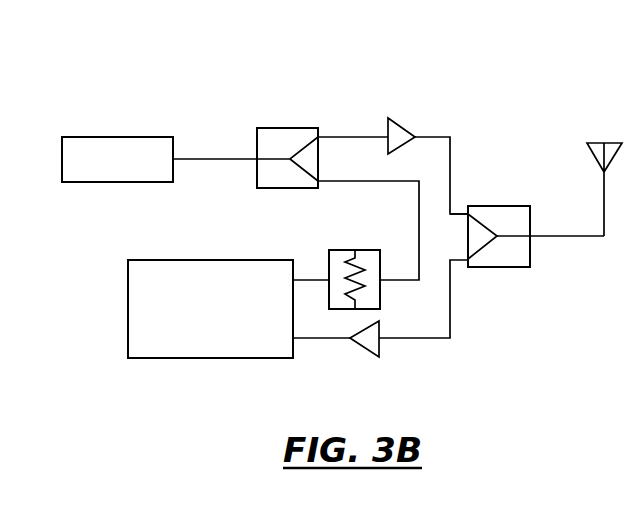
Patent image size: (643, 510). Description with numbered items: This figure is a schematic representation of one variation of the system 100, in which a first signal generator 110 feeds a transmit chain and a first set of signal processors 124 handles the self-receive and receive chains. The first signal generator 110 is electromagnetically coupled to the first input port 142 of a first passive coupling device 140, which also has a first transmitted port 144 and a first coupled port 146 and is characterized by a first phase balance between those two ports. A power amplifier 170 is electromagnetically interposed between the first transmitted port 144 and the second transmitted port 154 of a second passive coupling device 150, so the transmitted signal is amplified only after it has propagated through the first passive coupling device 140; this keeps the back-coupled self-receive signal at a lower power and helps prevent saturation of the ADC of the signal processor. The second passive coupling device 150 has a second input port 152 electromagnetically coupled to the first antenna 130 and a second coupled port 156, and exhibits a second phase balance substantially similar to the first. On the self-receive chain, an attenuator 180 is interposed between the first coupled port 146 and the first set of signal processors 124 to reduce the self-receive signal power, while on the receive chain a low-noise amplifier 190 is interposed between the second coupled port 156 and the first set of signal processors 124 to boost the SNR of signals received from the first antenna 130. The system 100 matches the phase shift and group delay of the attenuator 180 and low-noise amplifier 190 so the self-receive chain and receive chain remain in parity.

The system 100 is at (54, 59).
The first signal generator 110 is at (118, 137).
The first set of signal processors 124 is at (192, 360).
The first antenna 130 is at (592, 143).
The first passive coupling device 140 is at (295, 128).
The first input port 142 is at (257, 159).
The first transmitted port 144 is at (318, 137).
The first coupled port 146 is at (324, 183).
The second passive coupling device 150 is at (513, 206).
The second input port 152 is at (531, 258).
The second transmitted port 154 is at (458, 212).
The second coupled port 156 is at (460, 266).
The power amplifier 170 is at (394, 118).
The attenuator 180 is at (362, 250).
The low-noise amplifier 190 is at (379, 348).